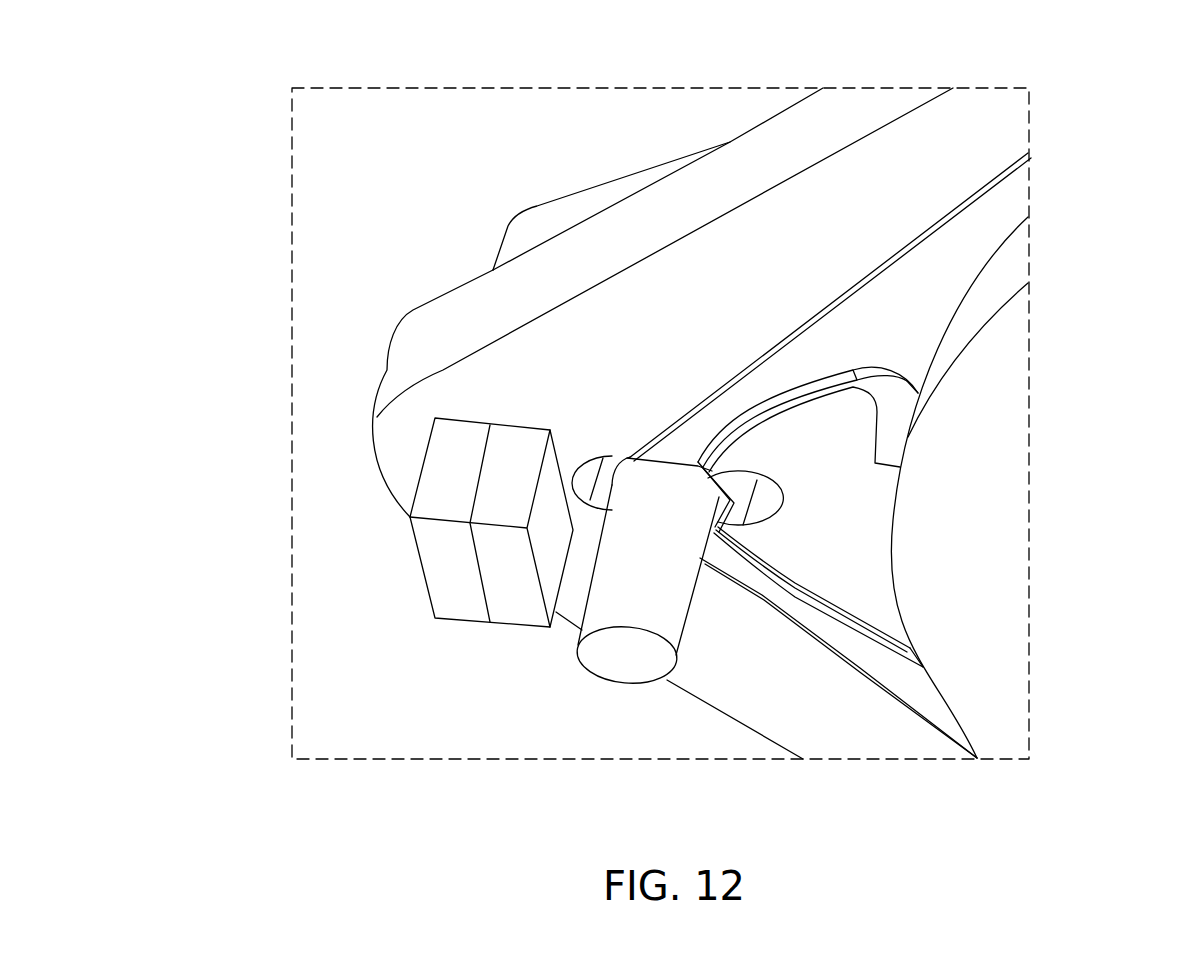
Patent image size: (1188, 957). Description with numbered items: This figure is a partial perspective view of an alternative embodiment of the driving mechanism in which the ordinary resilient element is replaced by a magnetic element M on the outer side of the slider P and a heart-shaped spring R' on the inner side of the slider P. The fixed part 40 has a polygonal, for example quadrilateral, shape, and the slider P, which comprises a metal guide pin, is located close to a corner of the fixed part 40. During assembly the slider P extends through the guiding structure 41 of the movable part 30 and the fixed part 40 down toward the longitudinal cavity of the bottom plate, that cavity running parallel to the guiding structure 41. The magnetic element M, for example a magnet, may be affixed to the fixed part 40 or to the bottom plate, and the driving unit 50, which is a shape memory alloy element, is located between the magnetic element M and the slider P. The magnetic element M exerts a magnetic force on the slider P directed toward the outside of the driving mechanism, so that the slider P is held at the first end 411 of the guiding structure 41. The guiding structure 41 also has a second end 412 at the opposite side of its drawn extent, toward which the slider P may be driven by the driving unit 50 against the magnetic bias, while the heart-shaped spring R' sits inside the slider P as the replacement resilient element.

The movable part 30 is at (533, 227).
The fixed part 40 is at (443, 327).
The guiding structure 41 is at (673, 463).
The first end 411 is at (583, 457).
The second protrusion 412 is at (787, 507).
The driving unit 50 is at (1000, 178).
The magnetic element M is at (443, 463).
The slider P is at (632, 603).
The heart-shaped spring R' is at (810, 596).